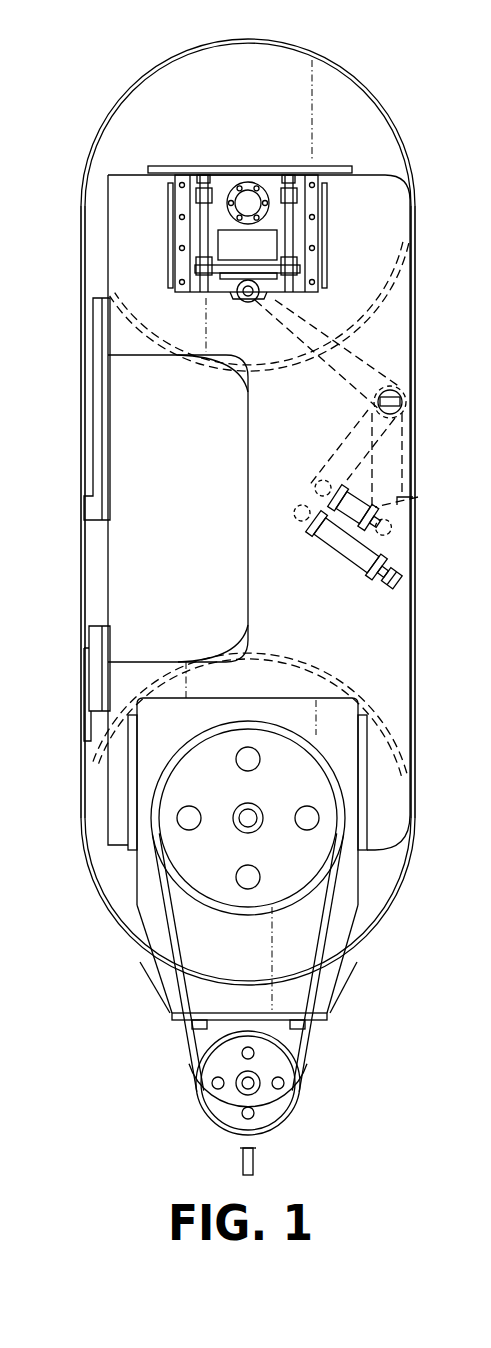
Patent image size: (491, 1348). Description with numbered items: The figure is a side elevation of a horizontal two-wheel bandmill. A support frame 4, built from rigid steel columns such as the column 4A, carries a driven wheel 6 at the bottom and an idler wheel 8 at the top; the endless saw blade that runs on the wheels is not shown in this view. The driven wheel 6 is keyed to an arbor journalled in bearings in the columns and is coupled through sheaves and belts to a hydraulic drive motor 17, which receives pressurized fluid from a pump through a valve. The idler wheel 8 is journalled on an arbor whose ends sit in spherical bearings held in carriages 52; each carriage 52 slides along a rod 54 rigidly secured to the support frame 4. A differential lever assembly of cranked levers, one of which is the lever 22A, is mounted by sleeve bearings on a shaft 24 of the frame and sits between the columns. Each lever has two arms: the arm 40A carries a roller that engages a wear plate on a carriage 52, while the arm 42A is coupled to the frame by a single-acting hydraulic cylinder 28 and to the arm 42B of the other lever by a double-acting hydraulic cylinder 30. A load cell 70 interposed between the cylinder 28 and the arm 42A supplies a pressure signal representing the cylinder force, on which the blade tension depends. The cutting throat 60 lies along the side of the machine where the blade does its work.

The support frame 4 is at (418, 753).
The column 4A is at (390, 223).
The driven wheel 6 is at (100, 889).
The idler wheel 8 is at (110, 118).
The hydraulic drive motor 17 is at (197, 1123).
The cranked lever 22A is at (372, 358).
The shaft 24 is at (403, 391).
The single-acting hydraulic cylinder 28 is at (345, 570).
The double-acting hydraulic cylinder 30 is at (412, 511).
The arm 40A is at (314, 376).
The arm 42A is at (343, 430).
The arm 42B is at (445, 482).
The carriage 52 is at (228, 183).
The rod 54 is at (203, 231).
The cutting throat 60 is at (93, 581).
The load cell 70 is at (312, 535).